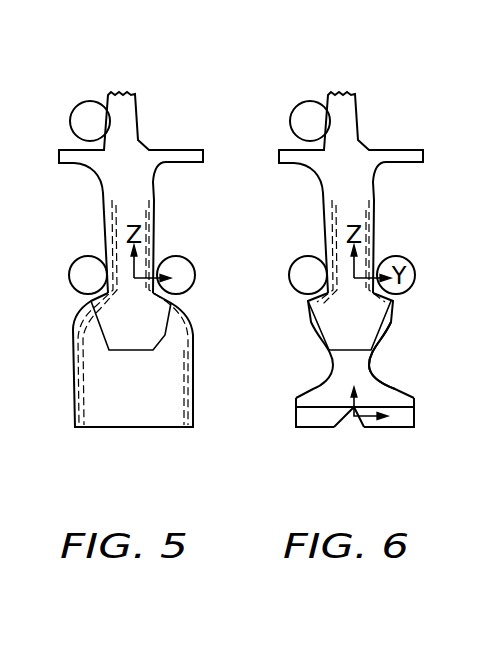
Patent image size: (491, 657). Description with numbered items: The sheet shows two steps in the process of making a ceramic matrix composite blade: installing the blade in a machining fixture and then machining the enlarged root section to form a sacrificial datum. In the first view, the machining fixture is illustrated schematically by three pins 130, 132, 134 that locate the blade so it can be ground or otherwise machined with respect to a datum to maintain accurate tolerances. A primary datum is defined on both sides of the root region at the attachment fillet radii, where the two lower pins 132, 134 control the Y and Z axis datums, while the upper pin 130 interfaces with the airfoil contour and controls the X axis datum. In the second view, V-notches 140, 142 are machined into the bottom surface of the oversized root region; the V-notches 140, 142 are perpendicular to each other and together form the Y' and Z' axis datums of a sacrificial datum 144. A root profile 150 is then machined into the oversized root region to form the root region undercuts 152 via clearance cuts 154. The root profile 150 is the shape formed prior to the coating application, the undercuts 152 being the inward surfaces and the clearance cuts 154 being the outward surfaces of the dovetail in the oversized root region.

In FIG. 5, the pin 130 is at (88, 100).
In FIG. 5, the pin 132 is at (74, 261).
In FIG. 5, the pin 134 is at (185, 259).
In FIG. 6, the V-notch 140 is at (353, 410).
In FIG. 6, the V-notch 142 is at (413, 420).
In FIG. 6, the sacrificial datum 144 is at (286, 442).
In FIG. 6, the root profile 150 is at (303, 349).
In FIG. 6, the undercut 152 is at (386, 336).
In FIG. 6, the clearance cut 154 is at (377, 377).